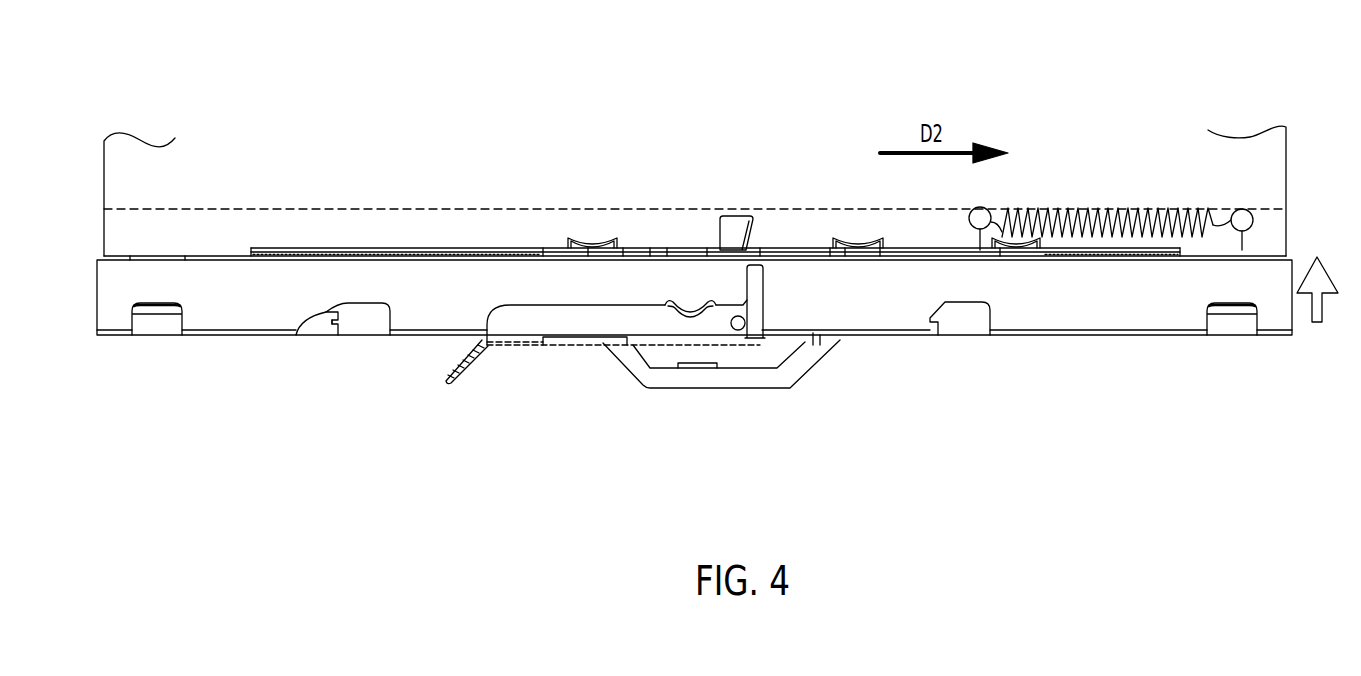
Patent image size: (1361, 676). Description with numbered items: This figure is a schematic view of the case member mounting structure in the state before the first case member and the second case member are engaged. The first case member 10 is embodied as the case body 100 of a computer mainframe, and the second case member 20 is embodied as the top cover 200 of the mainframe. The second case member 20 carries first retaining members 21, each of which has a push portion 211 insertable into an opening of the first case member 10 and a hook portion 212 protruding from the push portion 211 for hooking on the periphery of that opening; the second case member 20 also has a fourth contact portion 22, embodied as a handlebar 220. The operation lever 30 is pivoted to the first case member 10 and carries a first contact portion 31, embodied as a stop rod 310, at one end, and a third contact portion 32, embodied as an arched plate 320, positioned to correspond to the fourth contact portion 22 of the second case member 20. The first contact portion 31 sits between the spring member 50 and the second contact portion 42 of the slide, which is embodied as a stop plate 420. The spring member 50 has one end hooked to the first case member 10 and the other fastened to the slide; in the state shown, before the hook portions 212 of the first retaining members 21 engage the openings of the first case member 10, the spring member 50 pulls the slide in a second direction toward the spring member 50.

The first case member 10 is at (695, 166).
The case body 100 is at (1243, 152).
The second case member 20 is at (702, 342).
The top cover 200 is at (1278, 335).
The first retaining member 21 is at (365, 325).
The push portion 211 is at (296, 335).
The hook portion 212 is at (337, 340).
The fourth contact portion 22 is at (721, 383).
The handlebar 220 is at (715, 373).
The operation lever 30 is at (510, 333).
The first contact portion 31 is at (786, 241).
The stop rod 310 is at (757, 267).
The third contact portion 32 is at (650, 367).
The arched plate 320 is at (683, 307).
The second contact portion 42 is at (705, 197).
The stop plate 420 is at (732, 222).
The spring member 50 is at (1072, 210).